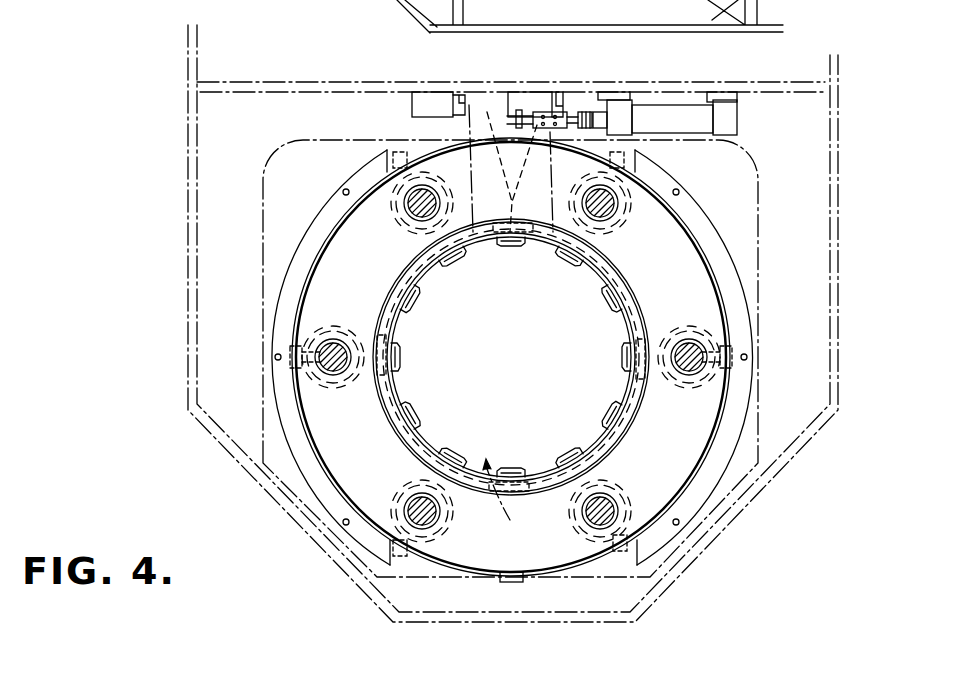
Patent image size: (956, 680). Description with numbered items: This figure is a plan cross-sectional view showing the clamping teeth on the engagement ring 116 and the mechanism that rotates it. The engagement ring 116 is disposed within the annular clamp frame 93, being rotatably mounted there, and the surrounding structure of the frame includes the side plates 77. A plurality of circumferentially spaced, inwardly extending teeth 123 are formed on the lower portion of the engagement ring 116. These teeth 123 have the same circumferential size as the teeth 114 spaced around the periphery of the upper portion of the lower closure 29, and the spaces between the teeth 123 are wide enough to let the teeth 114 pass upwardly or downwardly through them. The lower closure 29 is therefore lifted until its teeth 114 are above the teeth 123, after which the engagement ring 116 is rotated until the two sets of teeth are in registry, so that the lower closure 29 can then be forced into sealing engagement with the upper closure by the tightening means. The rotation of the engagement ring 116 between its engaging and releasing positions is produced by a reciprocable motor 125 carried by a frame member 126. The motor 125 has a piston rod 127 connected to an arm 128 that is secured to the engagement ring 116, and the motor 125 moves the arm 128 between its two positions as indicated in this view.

The side plates 77 is at (595, 30).
The reciprocable motor 125 is at (677, 110).
The frame member 126 is at (783, 82).
The piston rod 127 is at (590, 110).
The arm 128 is at (642, 151).
The teeth 123 is at (417, 306).
The teeth 114 is at (396, 396).
The engagement ring 116 is at (633, 412).
The clamp frame 93 is at (684, 456).
The lower closure 29 is at (515, 499).